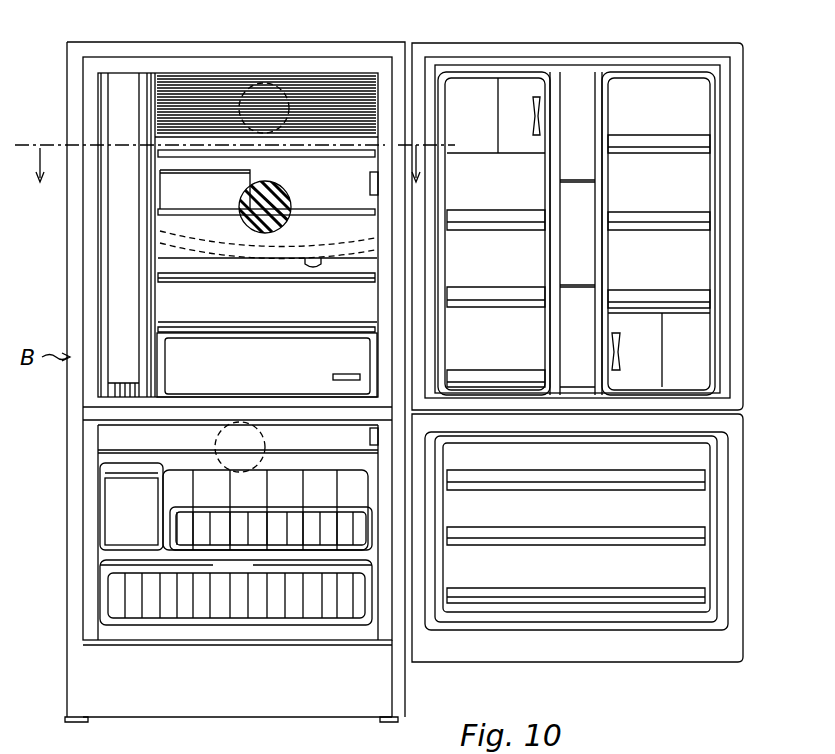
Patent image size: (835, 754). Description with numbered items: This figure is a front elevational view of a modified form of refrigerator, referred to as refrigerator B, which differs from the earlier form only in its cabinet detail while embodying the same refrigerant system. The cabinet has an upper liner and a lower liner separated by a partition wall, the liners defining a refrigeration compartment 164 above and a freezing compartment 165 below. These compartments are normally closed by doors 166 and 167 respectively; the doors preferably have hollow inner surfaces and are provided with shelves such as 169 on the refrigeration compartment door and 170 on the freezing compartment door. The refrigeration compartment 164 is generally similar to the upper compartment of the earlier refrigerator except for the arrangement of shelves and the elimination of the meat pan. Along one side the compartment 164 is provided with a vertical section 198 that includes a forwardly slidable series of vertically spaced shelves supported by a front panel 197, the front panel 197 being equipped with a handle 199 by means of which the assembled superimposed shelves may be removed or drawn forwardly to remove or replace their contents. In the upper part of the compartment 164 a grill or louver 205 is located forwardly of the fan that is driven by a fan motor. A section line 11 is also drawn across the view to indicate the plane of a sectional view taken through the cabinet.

The section line 11- 11 is at (250, 149).
The refrigeration compartment 164 is at (290, 310).
The freezing compartment 165 is at (140, 512).
The door 166 is at (722, 180).
The door 167 is at (730, 462).
The shelves 169 is at (665, 230).
The shelves 170 is at (683, 598).
The front panel 197 is at (118, 298).
The vertical section 198 is at (95, 205).
The handle 199 is at (110, 388).
The grill or louver 205 is at (207, 85).